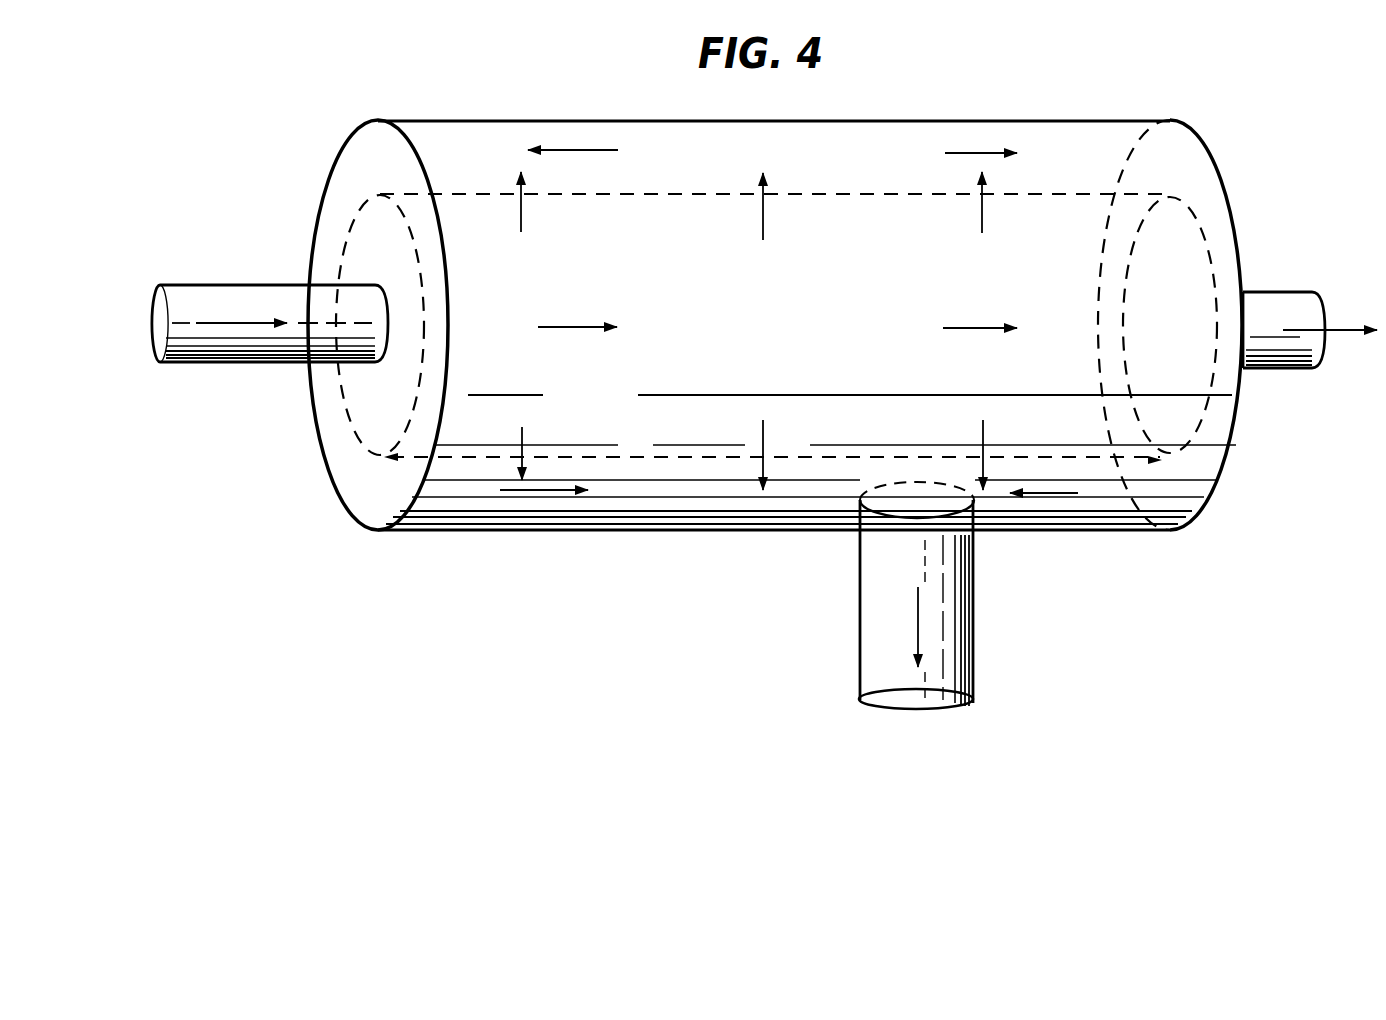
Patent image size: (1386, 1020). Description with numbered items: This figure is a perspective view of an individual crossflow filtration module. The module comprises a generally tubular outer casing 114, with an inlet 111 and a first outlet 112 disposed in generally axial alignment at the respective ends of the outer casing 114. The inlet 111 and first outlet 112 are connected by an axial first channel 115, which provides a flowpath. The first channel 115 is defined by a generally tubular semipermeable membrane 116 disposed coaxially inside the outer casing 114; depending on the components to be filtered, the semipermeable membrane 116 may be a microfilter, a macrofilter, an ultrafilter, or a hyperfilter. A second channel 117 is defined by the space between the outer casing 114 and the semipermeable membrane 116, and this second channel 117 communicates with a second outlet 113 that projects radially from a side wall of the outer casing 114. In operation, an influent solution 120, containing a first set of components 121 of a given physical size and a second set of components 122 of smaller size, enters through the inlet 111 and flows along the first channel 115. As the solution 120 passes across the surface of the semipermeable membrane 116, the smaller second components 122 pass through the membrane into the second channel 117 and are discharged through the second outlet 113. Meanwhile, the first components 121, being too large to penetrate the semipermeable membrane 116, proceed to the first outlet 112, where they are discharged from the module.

The inlet 111 is at (272, 285).
The first outlet 112 is at (1303, 292).
The second outlet 113 is at (862, 607).
The outer casing 114 is at (508, 120).
The first channel 115 is at (604, 391).
The semipermeable membrane 116 is at (648, 458).
The second channel 117 is at (490, 498).
The influent solution 120 is at (248, 325).
The first components 121 is at (990, 325).
The second components 122 is at (765, 215).